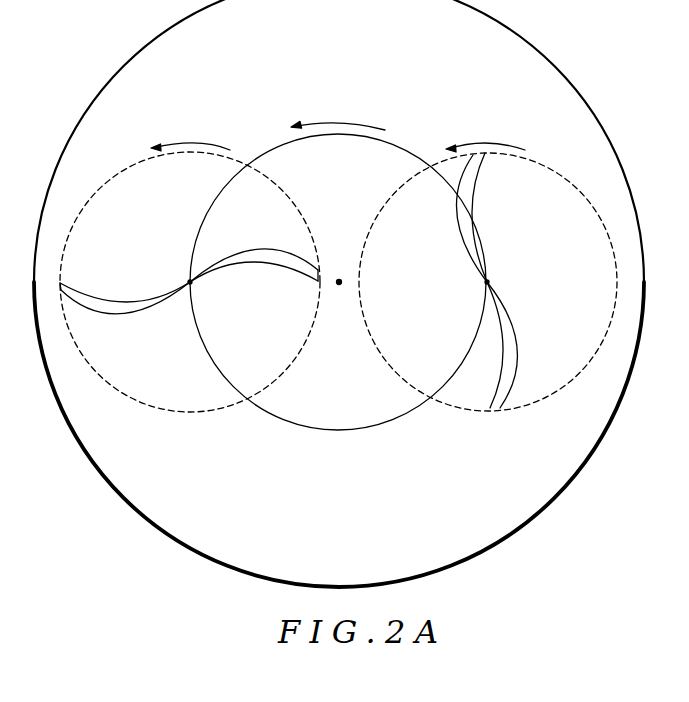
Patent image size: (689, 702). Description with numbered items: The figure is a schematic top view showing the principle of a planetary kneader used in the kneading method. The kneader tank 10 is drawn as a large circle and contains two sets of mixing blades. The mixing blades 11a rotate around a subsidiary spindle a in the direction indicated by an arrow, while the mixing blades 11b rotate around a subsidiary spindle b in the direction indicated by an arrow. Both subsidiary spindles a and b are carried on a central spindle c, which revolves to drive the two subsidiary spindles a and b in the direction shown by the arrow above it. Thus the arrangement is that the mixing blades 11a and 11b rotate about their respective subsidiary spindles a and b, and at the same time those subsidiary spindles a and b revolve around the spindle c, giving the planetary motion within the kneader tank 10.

The kneader tank 10 is at (106, 87).
The mixing blades 11a is at (458, 232).
The mixing blades 11b is at (120, 309).
The subsidiary spindle a is at (489, 281).
The subsidiary spindle b is at (190, 281).
The spindle c is at (338, 280).